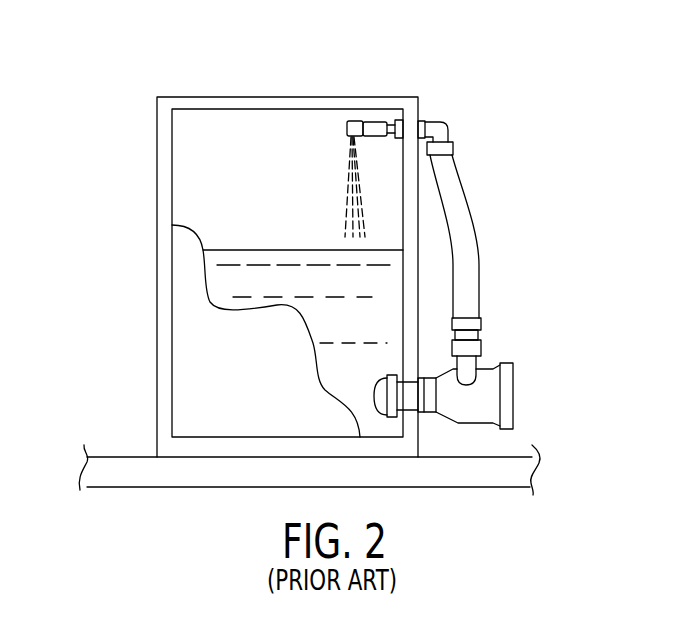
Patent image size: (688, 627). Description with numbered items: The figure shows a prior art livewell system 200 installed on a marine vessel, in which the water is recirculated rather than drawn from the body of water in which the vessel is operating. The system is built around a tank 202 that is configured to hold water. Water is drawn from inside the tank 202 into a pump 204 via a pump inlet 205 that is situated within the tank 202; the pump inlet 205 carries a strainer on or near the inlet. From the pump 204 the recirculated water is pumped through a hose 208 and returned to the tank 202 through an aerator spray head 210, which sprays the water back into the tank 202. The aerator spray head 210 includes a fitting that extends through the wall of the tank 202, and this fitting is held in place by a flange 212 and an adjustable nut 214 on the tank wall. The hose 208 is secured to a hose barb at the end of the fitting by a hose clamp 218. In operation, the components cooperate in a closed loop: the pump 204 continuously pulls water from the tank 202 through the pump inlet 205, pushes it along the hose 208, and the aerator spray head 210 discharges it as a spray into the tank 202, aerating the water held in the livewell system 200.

The livewell system 200 is at (497, 89).
The tank 202 is at (157, 346).
The pump 204 is at (473, 398).
The pump inlet 205 is at (375, 392).
The hose 208 is at (479, 260).
The aerator spray head 210 is at (376, 121).
The flange 212 is at (424, 120).
The adjustable nut 214 is at (400, 120).
The hose clamp 218 is at (456, 150).